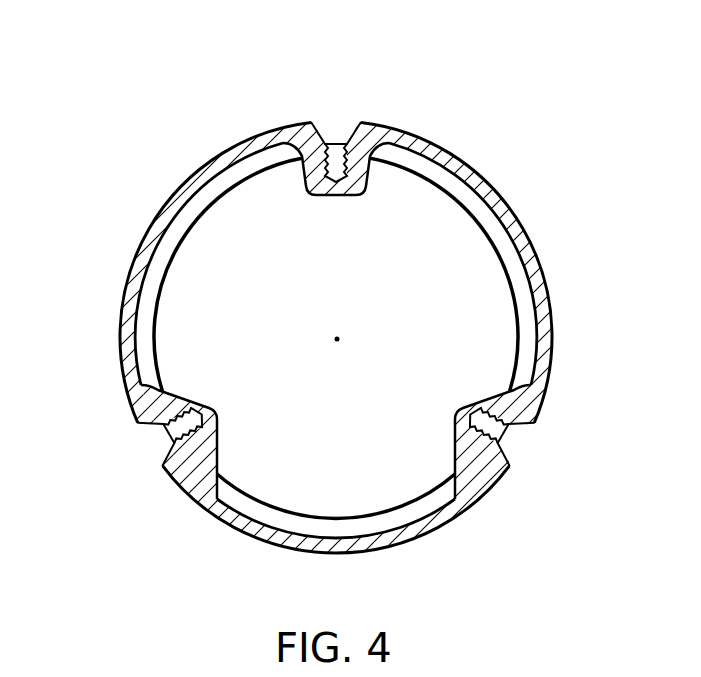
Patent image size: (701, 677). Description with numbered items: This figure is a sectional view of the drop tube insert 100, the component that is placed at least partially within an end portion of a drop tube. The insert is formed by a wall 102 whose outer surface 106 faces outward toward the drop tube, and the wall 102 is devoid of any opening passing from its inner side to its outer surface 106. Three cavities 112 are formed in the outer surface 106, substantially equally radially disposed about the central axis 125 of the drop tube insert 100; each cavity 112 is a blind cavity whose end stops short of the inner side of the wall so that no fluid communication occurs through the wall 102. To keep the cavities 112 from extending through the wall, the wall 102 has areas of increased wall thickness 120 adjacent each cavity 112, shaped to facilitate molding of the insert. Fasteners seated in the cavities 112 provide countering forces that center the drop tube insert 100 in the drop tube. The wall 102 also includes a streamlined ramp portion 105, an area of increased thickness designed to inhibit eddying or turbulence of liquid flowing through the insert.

The drop tube insert 100 is at (493, 142).
The wall 102 is at (218, 163).
The streamlined ramp portion 105 is at (163, 272).
The outer surface 106 is at (238, 533).
The cavity 112 is at (343, 128).
The area of increased wall thickness 120 is at (327, 197).
The central axis 125 is at (338, 338).